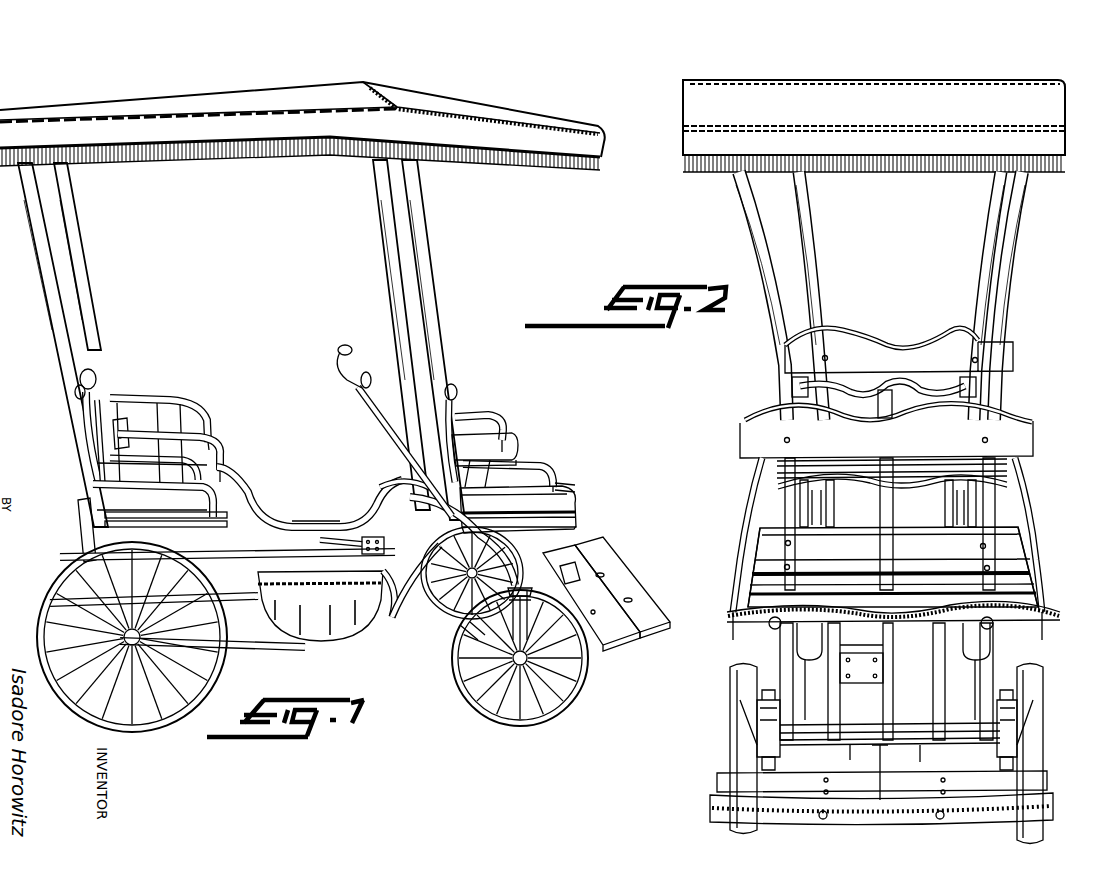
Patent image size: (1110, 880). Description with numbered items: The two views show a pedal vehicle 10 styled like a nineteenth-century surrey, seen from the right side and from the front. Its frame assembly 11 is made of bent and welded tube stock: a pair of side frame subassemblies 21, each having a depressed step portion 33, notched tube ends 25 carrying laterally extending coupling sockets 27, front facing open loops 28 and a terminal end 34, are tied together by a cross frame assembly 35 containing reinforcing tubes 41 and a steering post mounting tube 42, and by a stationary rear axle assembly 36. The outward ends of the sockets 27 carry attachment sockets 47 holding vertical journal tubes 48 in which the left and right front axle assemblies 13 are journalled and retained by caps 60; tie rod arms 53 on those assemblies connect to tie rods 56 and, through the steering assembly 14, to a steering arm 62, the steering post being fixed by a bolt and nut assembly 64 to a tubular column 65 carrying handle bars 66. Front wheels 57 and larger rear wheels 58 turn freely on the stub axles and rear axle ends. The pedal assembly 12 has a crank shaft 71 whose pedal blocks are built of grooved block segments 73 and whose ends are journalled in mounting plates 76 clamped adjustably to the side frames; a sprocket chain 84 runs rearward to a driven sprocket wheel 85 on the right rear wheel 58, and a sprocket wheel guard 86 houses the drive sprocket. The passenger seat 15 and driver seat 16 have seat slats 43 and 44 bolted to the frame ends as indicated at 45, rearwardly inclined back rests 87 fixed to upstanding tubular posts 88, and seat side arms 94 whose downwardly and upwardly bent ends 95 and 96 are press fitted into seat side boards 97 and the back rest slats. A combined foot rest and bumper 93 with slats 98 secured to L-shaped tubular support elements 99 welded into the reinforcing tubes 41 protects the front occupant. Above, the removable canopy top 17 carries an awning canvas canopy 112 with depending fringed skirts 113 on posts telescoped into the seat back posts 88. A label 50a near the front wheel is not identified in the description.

In FIG. 1, the pedal vehicle 10 is at (450, 256).
In FIG. 2, the pedal vehicle 10 is at (1047, 246).
In FIG. 1, the frame assembly 11 is at (376, 632).
In FIG. 2, the frame assembly 11 is at (1015, 683).
In FIG. 1, the pedal assembly 12 is at (320, 540).
In FIG. 2, the pedal assembly 12 is at (821, 654).
In FIG. 1, the front axle assembly 13 is at (470, 672).
In FIG. 2, the front axle assembly 13 is at (776, 754).
In FIG. 1, the steering assembly 14 is at (378, 437).
In FIG. 2, the steering assembly 14 is at (902, 518).
In FIG. 1, the passenger seat 15 is at (529, 430).
In FIG. 2, the passenger seat 15 is at (1053, 530).
In FIG. 1, the driver seat 16 is at (229, 426).
In FIG. 2, the driver seat 16 is at (1027, 364).
In FIG. 1, the canopy type top 17 is at (674, 119).
In FIG. 2, the canopy type top 17 is at (874, 117).
In FIG. 1, the side frame subassemblies 21 is at (255, 504).
In FIG. 2, the side frame subassemblies 21 is at (780, 636).
In FIG. 2, the notched ends 25 is at (800, 722).
In FIG. 2, the tubular coupling sockets 27 is at (790, 742).
In FIG. 1, the front facing open loops 28 is at (80, 509).
In FIG. 2, the front facing open loops 28 is at (960, 520).
In FIG. 1, the step portion 33 is at (277, 506).
In FIG. 1, the terminal end 34 is at (486, 520).
In FIG. 2, the terminal end 34 is at (768, 622).
In FIG. 1, the cross frame assembly 35 is at (536, 520).
In FIG. 2, the cross frame assembly 35 is at (935, 675).
In FIG. 1, the rear axle assembly 36 is at (116, 622).
In FIG. 2, the reinforcing tubes 41 is at (830, 672).
In FIG. 2, the steering post mounting tube 42 is at (891, 715).
In FIG. 1, the seat slats 43 is at (150, 481).
In FIG. 2, the seat slats 43 is at (800, 475).
In FIG. 1, the seat slats 44 is at (224, 461).
In FIG. 2, the seat slats 44 is at (910, 475).
In FIG. 1, the securing screws 45 is at (94, 368).
In FIG. 2, the securing screws 45 is at (829, 359).
In FIG. 1, the attachment sockets 47 is at (558, 680).
In FIG. 2, the attachment sockets 47 is at (755, 731).
In FIG. 1, the journal tubes 48 is at (522, 597).
In FIG. 2, the journal tubes 48 is at (760, 745).
In FIG. 1, the far front wheel 50a is at (446, 604).
In FIG. 1, the tie rod arms 53 is at (428, 556).
In FIG. 2, the tie rod arms 53 is at (766, 750).
In FIG. 1, the tie rods 56 is at (462, 632).
In FIG. 1, the front wheels 57 is at (510, 552).
In FIG. 2, the front wheels 57 is at (740, 694).
In FIG. 1, the rear wheels 58 is at (72, 532).
In FIG. 2, the rear wheels 58 is at (1026, 491).
In FIG. 2, the cap 60 is at (772, 690).
In FIG. 2, the steering arm 62 is at (888, 772).
In FIG. 1, the bolt and nut assembly 64 is at (401, 477).
In FIG. 1, the tubular column 65 is at (360, 402).
In FIG. 1, the handle bars 66 is at (354, 352).
In FIG. 2, the handle bars 66 is at (870, 380).
In FIG. 1, the crank shaft 71 is at (350, 586).
In FIG. 2, the crank shaft 71 is at (832, 656).
In FIG. 1, the block segments 73 is at (373, 536).
In FIG. 2, the block segments 73 is at (856, 684).
In FIG. 1, the mounting plates 76 is at (336, 540).
In FIG. 1, the sprocket chain 84 is at (292, 660).
In FIG. 1, the driven sprocket wheel 85 is at (205, 662).
In FIG. 1, the sprocket wheel guard 86 is at (328, 660).
In FIG. 1, the back rests 87 is at (100, 374).
In FIG. 2, the back rests 87 is at (935, 340).
In FIG. 1, the tubular posts 88 is at (126, 404).
In FIG. 2, the tubular posts 88 is at (972, 362).
In FIG. 1, the combined foot rest and bumper 93 is at (624, 646).
In FIG. 2, the combined foot rest and bumper 93 is at (1057, 802).
In FIG. 1, the seat side arms 94 is at (180, 401).
In FIG. 2, the seat side arms 94 is at (778, 401).
In FIG. 1, the downwardly bent ends 95 is at (226, 476).
In FIG. 2, the downwardly bent ends 95 is at (1040, 558).
In FIG. 1, the upwardly bent ends 96 is at (114, 398).
In FIG. 2, the upwardly bent ends 96 is at (1020, 467).
In FIG. 1, the seat side boards 97 is at (222, 441).
In FIG. 2, the seat side boards 97 is at (1038, 581).
In FIG. 1, the slats 98 is at (598, 554).
In FIG. 2, the slats 98 is at (885, 800).
In FIG. 1, the tubular support elements 99 is at (550, 585).
In FIG. 2, the tubular support elements 99 is at (884, 749).
In FIG. 1, the awning canvas canopy 112 is at (487, 106).
In FIG. 2, the awning canvas canopy 112 is at (1062, 106).
In FIG. 1, the fringed skirts 113 is at (262, 148).
In FIG. 2, the fringed skirts 113 is at (900, 160).